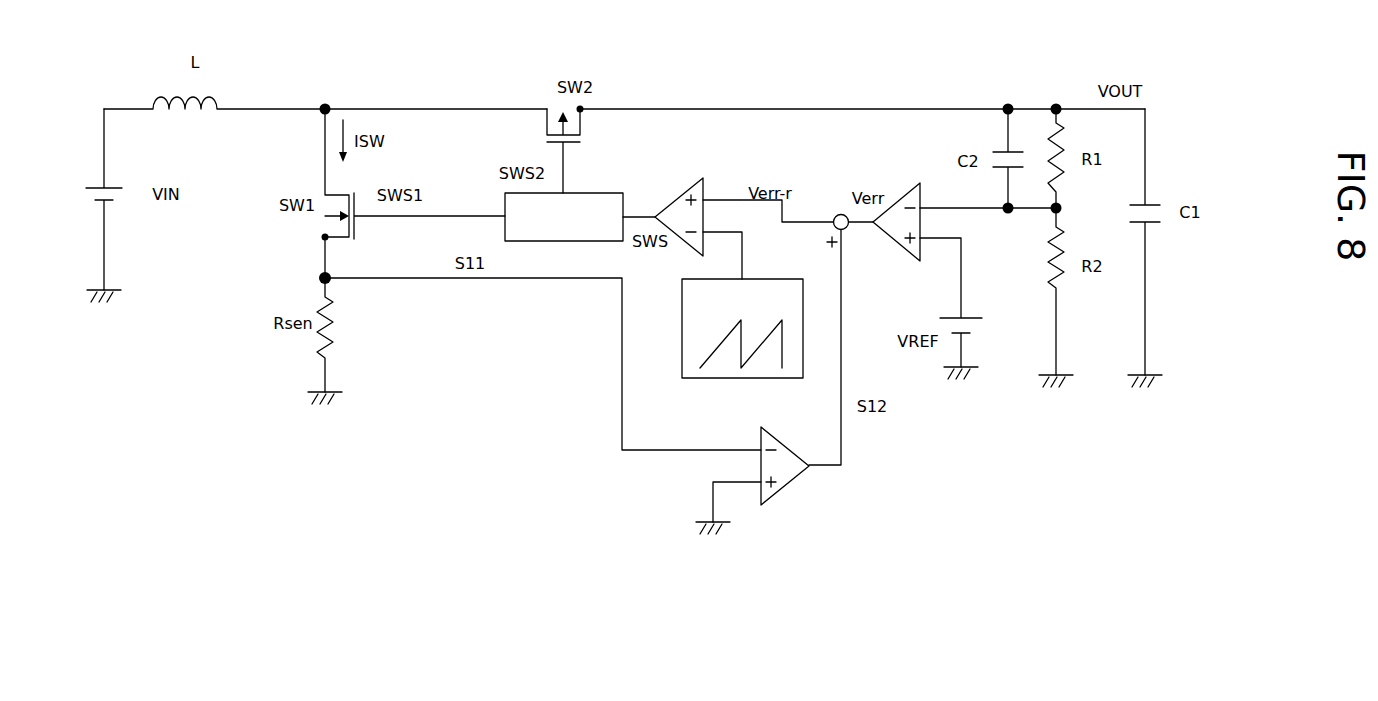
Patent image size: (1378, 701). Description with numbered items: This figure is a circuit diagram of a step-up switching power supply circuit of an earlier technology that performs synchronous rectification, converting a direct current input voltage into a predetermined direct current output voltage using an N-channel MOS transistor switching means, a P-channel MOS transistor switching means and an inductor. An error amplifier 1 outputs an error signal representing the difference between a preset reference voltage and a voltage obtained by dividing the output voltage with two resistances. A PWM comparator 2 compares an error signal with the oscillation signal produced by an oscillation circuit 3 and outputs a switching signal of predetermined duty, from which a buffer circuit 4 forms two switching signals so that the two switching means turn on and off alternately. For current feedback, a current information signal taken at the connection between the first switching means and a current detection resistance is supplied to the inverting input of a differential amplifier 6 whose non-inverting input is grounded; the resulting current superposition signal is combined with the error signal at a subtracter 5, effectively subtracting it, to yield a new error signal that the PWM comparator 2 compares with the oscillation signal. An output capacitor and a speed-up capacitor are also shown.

The error amplifier 1 is at (896, 212).
The PWM comparator 2 is at (680, 213).
The oscillation circuit 3 is at (745, 379).
The buffer circuit 4 is at (600, 242).
The subtracter 5 is at (838, 214).
The differential amplifier 6 is at (786, 478).